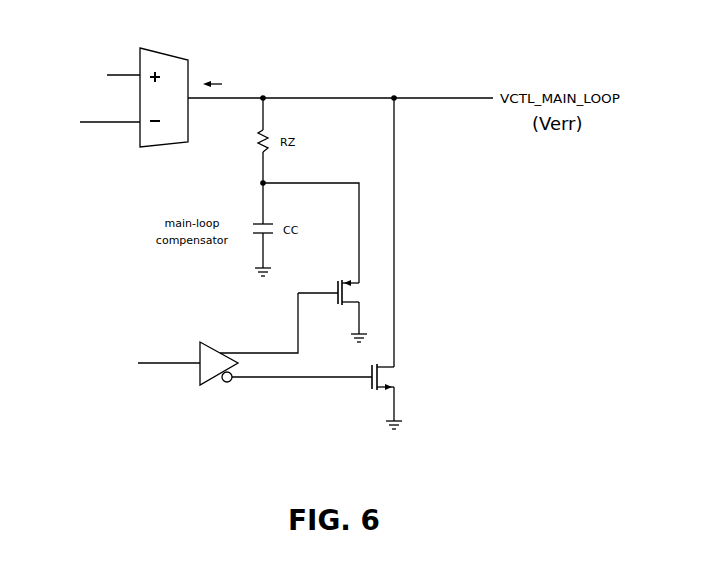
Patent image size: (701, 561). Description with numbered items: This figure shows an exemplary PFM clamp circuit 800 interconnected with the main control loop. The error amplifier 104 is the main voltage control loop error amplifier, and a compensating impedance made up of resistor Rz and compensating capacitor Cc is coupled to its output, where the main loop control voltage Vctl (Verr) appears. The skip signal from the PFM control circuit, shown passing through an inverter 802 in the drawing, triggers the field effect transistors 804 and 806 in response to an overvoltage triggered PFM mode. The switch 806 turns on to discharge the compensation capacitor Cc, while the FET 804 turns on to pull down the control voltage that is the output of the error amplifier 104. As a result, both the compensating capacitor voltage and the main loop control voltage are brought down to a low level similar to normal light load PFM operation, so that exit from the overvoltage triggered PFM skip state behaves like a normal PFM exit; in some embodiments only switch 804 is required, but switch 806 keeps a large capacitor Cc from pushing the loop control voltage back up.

The error amplifier 104 is at (165, 42).
The PFM clamp circuit 800 is at (352, 424).
The inverter 802 is at (210, 392).
The field effect transistor 804 is at (400, 377).
The switch 806 is at (333, 280).